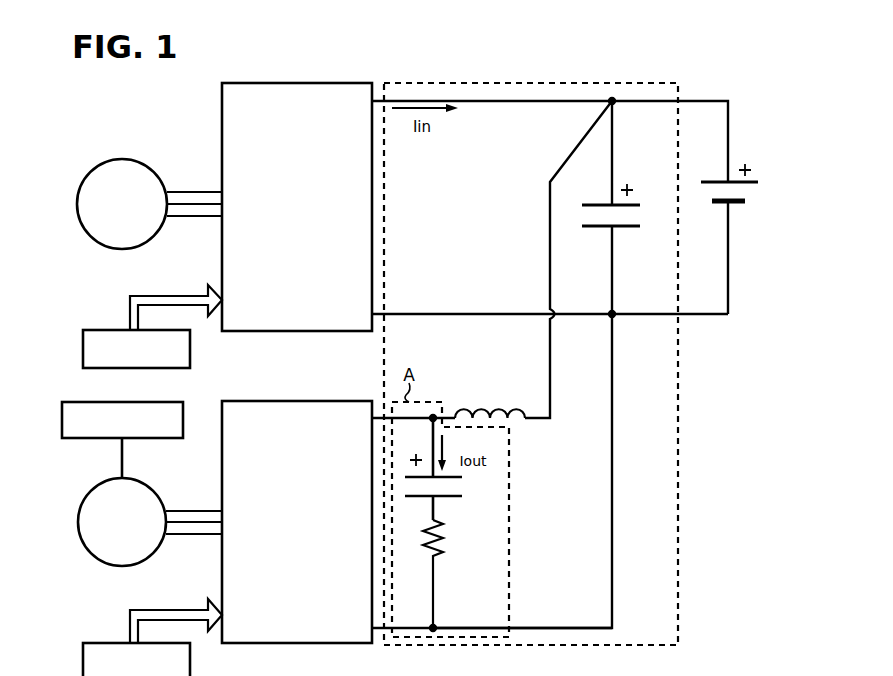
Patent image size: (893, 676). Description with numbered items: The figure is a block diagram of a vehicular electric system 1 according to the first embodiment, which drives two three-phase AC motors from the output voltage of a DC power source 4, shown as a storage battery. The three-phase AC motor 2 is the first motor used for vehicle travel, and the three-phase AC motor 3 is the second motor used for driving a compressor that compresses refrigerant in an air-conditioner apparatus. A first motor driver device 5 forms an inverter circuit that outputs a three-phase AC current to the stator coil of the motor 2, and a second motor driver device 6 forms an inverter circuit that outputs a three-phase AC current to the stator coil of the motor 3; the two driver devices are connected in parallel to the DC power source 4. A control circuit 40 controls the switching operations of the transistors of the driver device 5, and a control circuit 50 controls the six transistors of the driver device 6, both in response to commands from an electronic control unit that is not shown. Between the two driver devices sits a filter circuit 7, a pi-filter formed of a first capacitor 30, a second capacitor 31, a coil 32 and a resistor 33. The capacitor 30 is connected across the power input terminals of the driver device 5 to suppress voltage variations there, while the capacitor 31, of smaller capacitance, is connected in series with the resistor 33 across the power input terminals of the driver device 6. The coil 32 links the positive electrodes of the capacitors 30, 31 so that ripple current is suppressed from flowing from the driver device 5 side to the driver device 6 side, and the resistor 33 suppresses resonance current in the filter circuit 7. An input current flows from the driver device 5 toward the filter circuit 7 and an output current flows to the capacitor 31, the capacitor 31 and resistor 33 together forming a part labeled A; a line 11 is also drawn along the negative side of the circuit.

The vehicular electric system 1 is at (698, 612).
The three-phase AC motor 2 is at (90, 172).
The three-phase AC motor 3 is at (91, 491).
The DC power source 4 is at (740, 203).
The motor driver device 5 is at (248, 83).
The motor driver device 6 is at (248, 401).
The filter circuit 7 is at (500, 83).
The ground line 11 is at (522, 652).
The first capacitor 30 is at (626, 228).
The second capacitor 31 is at (440, 497).
The coil 32 is at (487, 410).
The resistor 33 is at (440, 550).
The control circuit 40 is at (93, 330).
The control circuit 50 is at (93, 643).